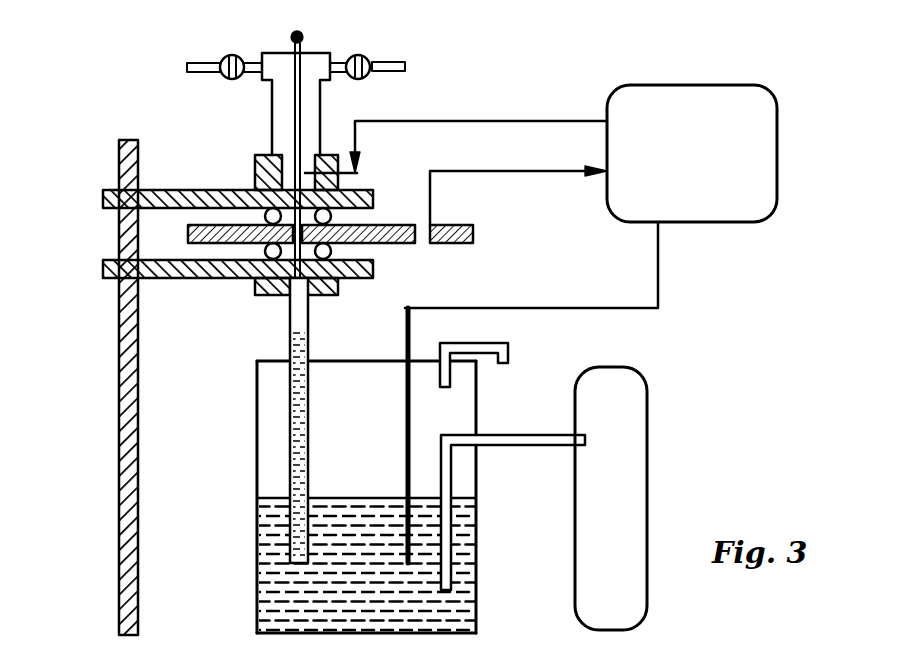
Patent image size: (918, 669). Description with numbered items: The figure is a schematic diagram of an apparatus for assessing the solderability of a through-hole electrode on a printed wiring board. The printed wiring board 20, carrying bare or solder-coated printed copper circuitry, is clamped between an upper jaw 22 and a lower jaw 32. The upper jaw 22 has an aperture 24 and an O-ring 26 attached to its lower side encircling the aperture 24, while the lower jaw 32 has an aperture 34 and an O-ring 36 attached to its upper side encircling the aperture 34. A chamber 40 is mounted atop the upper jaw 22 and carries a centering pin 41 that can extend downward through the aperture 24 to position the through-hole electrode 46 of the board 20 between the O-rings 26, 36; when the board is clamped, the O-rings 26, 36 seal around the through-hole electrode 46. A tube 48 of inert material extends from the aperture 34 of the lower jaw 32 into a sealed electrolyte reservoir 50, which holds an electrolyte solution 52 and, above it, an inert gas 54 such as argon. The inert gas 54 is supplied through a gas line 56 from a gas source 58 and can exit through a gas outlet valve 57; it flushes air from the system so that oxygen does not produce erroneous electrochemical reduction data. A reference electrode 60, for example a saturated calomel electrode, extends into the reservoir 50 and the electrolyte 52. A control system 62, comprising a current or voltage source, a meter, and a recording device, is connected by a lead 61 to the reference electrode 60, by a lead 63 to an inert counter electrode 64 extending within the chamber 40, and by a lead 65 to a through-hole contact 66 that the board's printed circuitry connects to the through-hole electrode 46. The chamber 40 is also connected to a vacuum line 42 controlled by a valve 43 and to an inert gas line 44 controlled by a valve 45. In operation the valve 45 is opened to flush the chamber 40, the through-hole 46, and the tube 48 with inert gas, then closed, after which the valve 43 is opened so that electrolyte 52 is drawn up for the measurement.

The printed wiring board 20 is at (475, 232).
The upper jaw 22 is at (103, 199).
The aperture 24 is at (255, 168).
The O-ring 26 is at (337, 216).
The lower jaw 32 is at (103, 268).
The aperture 34 is at (290, 302).
The O-ring 36 is at (333, 251).
The chamber 40 is at (273, 120).
The centering pin 41 is at (298, 92).
The vacuum line 42 is at (187, 68).
The valve 43 is at (227, 55).
The inert gas line 44 is at (407, 65).
The valve 45 is at (357, 55).
The through-hole electrode 46 is at (255, 283).
The tube 48 is at (308, 310).
The electrolyte reservoir 50 is at (256, 398).
The electrolyte solution 52 is at (277, 563).
The inert gas 54 is at (277, 462).
The gas line 56 is at (510, 435).
The gas outlet valve 57 is at (503, 356).
The gas source 58 is at (611, 498).
The reference electrode 60 is at (405, 360).
The lead 61 is at (562, 308).
The control system 62 is at (692, 153).
The lead 63 is at (487, 121).
The counter electrode 64 is at (357, 178).
The lead 65 is at (517, 170).
The through-hole contact 66 is at (432, 246).